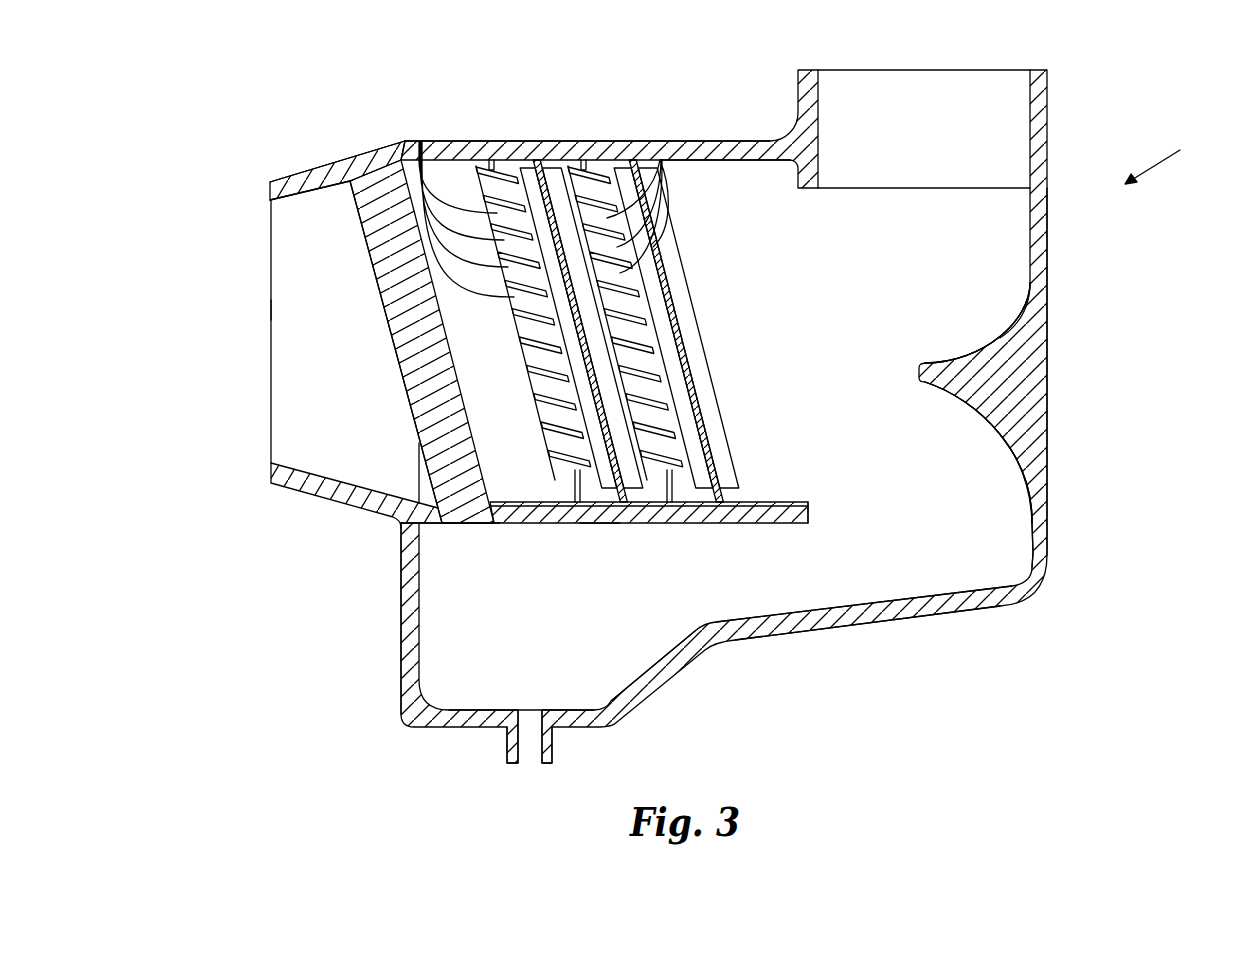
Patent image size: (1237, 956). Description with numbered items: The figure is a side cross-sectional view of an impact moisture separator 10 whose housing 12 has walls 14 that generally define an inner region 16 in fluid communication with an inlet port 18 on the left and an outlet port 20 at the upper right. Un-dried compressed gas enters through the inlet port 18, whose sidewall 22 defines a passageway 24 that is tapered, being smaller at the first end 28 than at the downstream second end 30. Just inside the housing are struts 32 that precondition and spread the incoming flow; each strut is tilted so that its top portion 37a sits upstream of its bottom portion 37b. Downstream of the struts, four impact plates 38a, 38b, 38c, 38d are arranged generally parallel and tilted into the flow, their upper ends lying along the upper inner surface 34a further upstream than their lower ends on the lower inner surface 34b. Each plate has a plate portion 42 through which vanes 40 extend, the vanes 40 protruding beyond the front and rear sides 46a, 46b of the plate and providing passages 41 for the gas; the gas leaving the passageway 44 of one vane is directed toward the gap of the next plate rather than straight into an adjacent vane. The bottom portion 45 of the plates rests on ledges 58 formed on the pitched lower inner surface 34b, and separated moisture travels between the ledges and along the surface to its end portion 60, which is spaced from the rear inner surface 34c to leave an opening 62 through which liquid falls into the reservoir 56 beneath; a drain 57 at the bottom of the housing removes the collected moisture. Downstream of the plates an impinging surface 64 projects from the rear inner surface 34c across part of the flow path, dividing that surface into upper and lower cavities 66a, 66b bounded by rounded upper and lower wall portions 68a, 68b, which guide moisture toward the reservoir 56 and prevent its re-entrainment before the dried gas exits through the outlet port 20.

The impact moisture separator 10 is at (1165, 154).
The housing 12 is at (1047, 128).
The walls 14 is at (400, 647).
The inner region 16 is at (813, 280).
The inlet port 18 is at (297, 360).
The outlet port 20 is at (930, 137).
The sidewall 22 is at (292, 178).
The passageway 24 is at (303, 308).
The first end 28 is at (271, 247).
The second end 30 is at (417, 475).
The struts 32 is at (413, 381).
The upper inner surface 34a is at (716, 148).
The lower inner surface 34b is at (526, 525).
The rear inner surface 34c is at (1027, 233).
The top portion 37a is at (370, 190).
The bottom portion 37b is at (403, 585).
The first impact plate 38a is at (480, 165).
The second impact plate 38b is at (541, 162).
The third impact plate 38c is at (585, 162).
The fourth impact plate 38d is at (628, 162).
The vanes 40 is at (420, 141).
The passages 41 is at (542, 382).
The plate portion 42 is at (650, 530).
The passageway 44 is at (727, 497).
The bottom portion 45 is at (585, 520).
The front side 46a is at (577, 505).
The rear side 46b is at (491, 160).
The reservoir 56 is at (567, 672).
The drain 57 is at (527, 768).
The ledges 58 is at (444, 528).
The end portion 60 is at (808, 512).
The opening 62 is at (912, 493).
The impinging surface 64 is at (1013, 393).
The upper cavity 66a is at (980, 285).
The lower cavity 66b is at (970, 467).
The upper wall portion 68a is at (1013, 318).
The lower wall portion 68b is at (1007, 443).